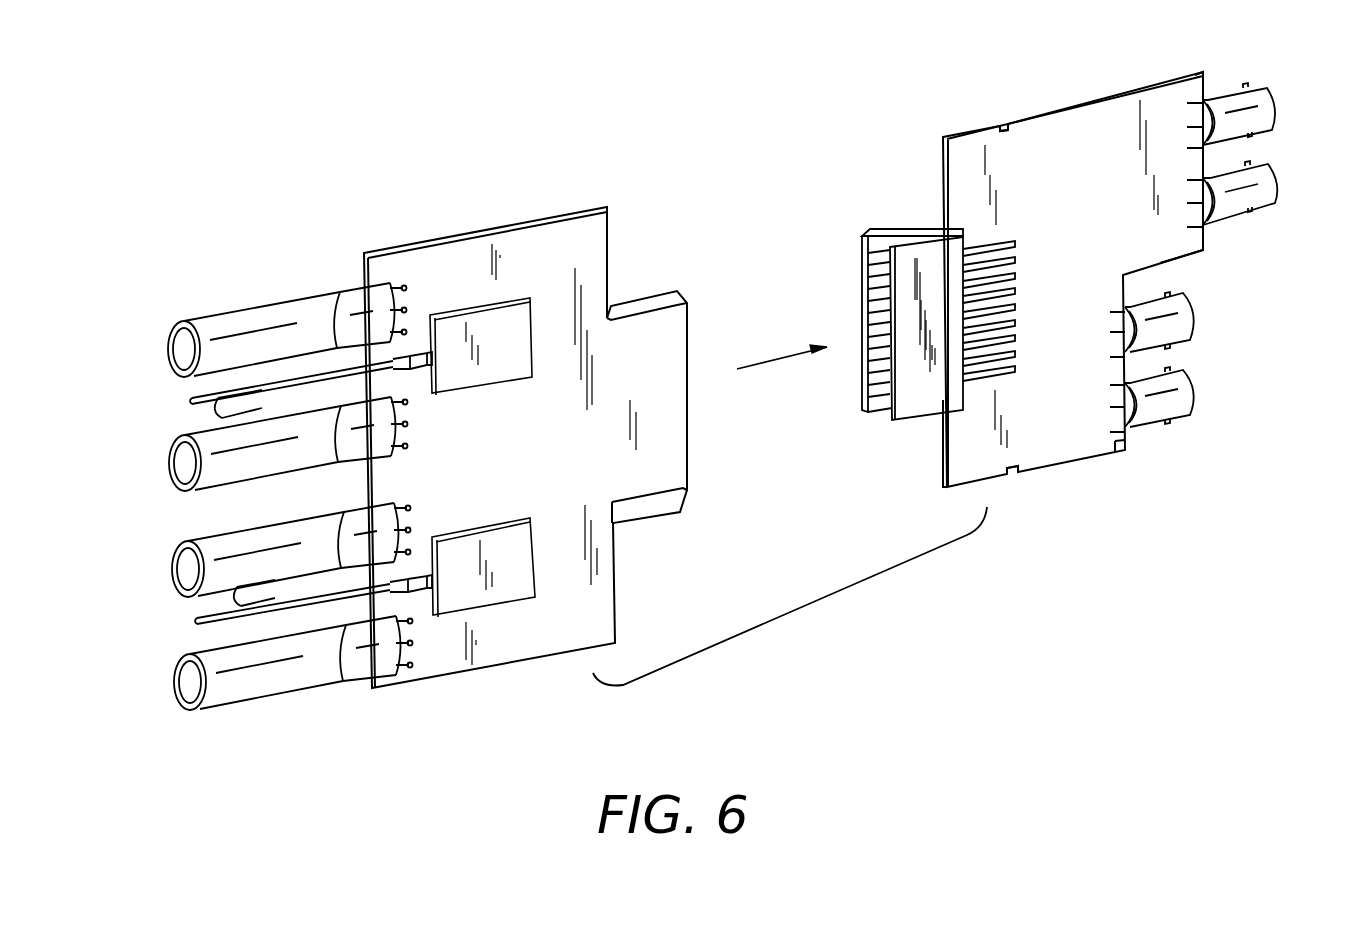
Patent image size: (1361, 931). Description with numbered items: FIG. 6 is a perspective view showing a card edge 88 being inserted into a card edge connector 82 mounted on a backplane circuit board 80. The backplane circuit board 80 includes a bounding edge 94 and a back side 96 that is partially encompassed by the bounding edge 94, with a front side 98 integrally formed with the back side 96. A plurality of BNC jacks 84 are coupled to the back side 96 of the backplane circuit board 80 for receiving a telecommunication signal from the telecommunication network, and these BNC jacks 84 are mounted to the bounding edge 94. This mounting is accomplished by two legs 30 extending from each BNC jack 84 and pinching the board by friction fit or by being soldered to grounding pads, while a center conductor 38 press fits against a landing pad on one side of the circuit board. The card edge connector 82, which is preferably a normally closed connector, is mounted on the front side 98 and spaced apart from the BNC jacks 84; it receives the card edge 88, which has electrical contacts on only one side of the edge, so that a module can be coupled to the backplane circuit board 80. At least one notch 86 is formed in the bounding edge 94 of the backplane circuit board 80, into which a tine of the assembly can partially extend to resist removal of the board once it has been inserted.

The backplane circuit board 80 is at (1102, 217).
The card edge connector 82 is at (915, 228).
The BNC jack 84 is at (1275, 128).
The notch 86 is at (1003, 122).
The card edge 88 is at (633, 305).
The bounding edge 94 is at (1083, 93).
The back side 96 is at (1203, 73).
The legs 30 is at (1197, 255).
The center conductor 38 is at (1117, 427).
The front side 98 is at (947, 470).